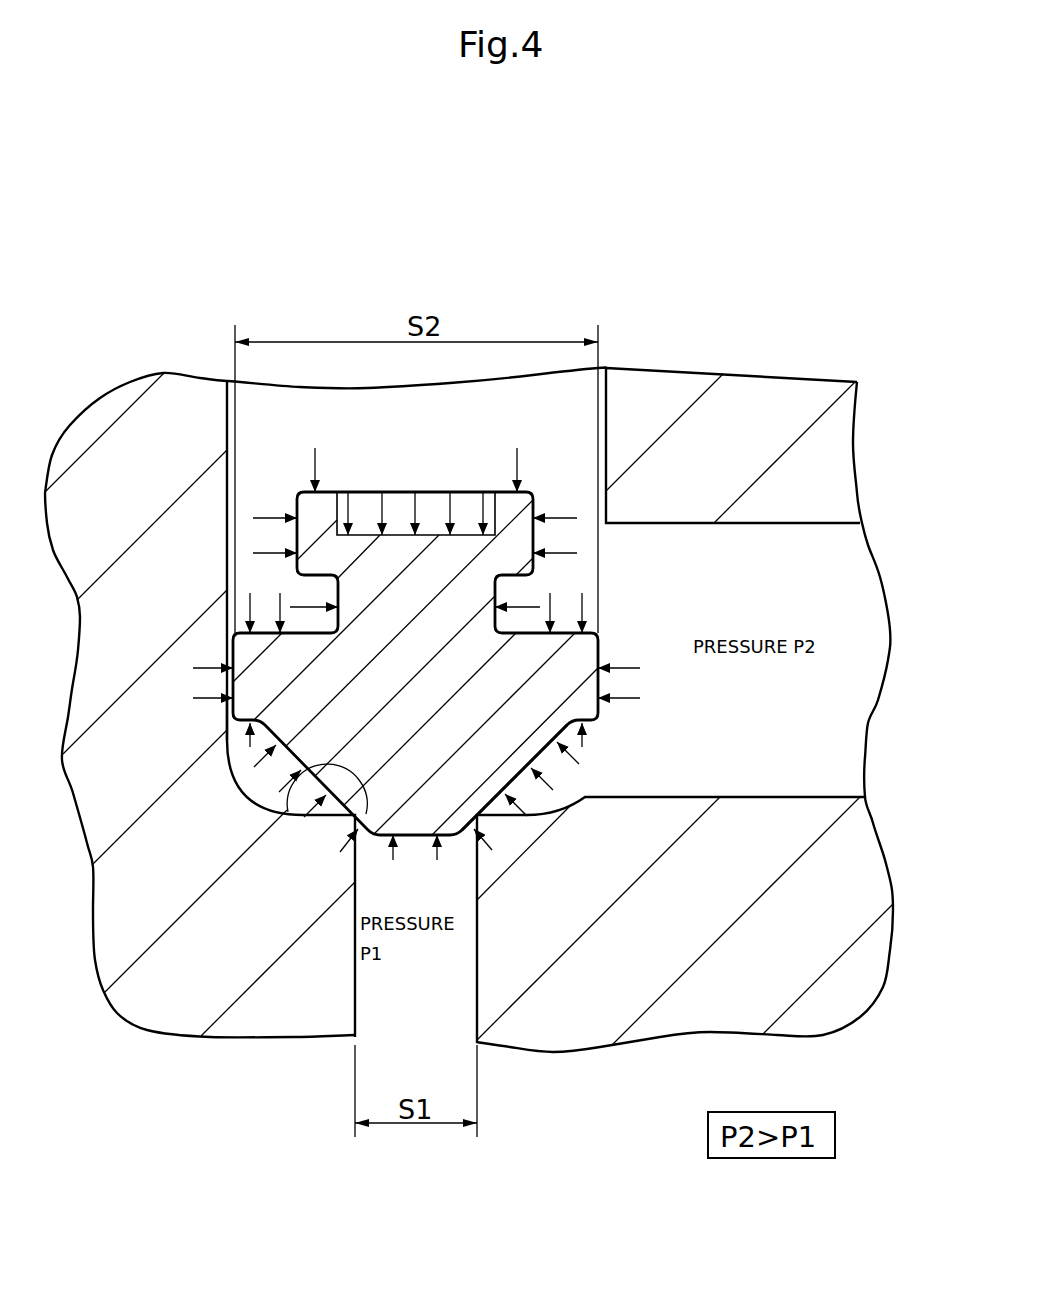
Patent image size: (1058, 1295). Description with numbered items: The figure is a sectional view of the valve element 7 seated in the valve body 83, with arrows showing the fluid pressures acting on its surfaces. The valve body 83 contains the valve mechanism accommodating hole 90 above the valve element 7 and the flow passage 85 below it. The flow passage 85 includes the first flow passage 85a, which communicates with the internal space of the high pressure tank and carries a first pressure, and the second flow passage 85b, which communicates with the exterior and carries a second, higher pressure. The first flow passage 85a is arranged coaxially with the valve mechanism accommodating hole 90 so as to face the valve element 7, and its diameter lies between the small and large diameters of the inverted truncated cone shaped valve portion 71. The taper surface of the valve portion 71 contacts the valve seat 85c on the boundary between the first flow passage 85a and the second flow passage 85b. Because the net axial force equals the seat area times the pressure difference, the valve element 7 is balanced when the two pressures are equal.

The valve element 7 is at (600, 640).
The valve portion 71 is at (548, 768).
The valve body 83 is at (761, 400).
The flow passage 85 is at (843, 582).
The first flow passage 85a is at (445, 978).
The second flow passage 85b is at (823, 723).
The valve seat 85c is at (289, 810).
The valve mechanism accommodating hole 90 is at (438, 452).